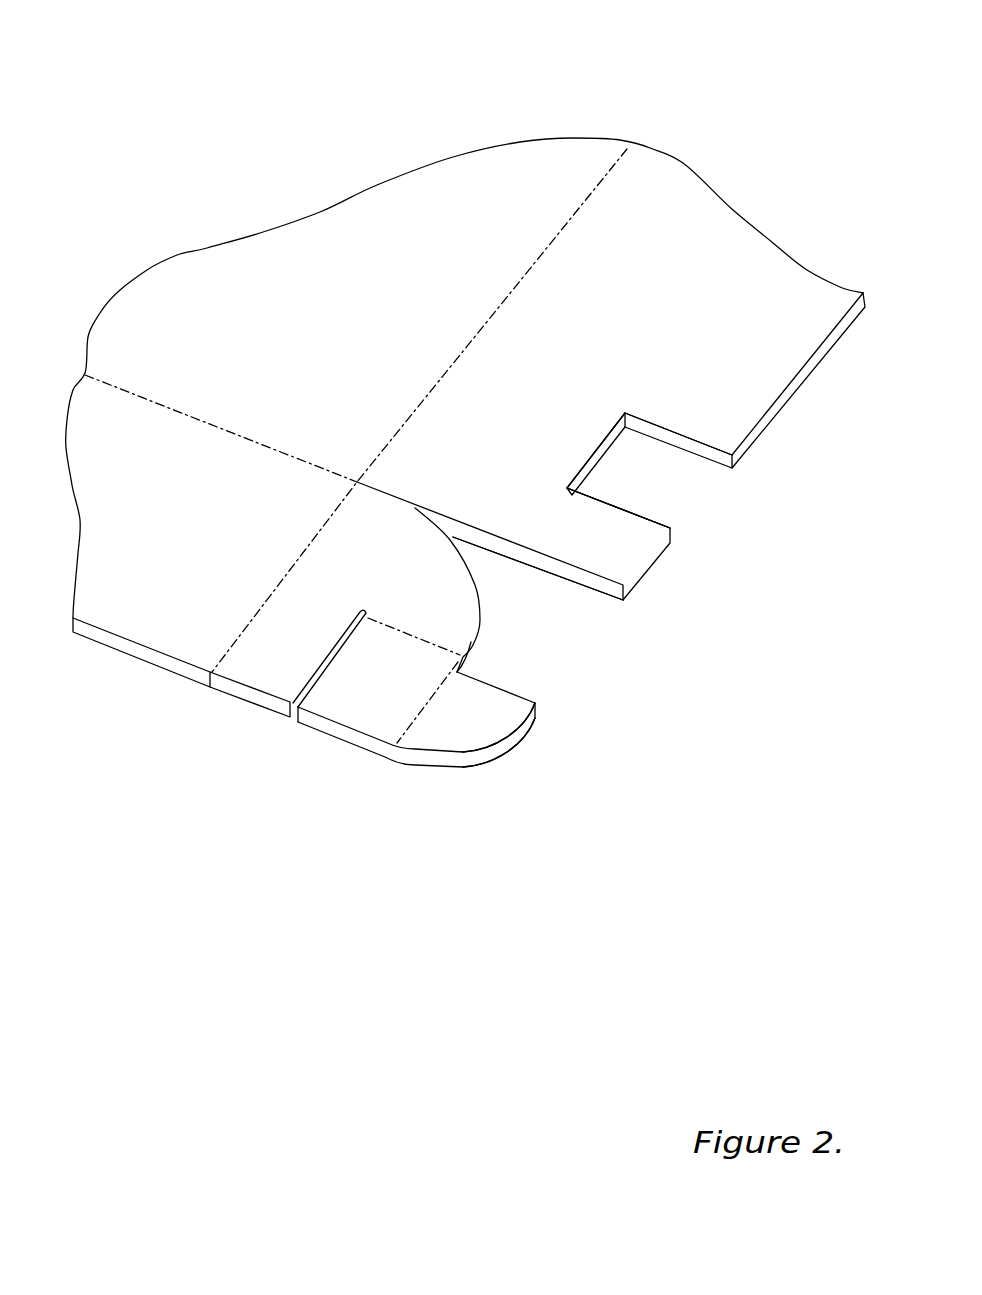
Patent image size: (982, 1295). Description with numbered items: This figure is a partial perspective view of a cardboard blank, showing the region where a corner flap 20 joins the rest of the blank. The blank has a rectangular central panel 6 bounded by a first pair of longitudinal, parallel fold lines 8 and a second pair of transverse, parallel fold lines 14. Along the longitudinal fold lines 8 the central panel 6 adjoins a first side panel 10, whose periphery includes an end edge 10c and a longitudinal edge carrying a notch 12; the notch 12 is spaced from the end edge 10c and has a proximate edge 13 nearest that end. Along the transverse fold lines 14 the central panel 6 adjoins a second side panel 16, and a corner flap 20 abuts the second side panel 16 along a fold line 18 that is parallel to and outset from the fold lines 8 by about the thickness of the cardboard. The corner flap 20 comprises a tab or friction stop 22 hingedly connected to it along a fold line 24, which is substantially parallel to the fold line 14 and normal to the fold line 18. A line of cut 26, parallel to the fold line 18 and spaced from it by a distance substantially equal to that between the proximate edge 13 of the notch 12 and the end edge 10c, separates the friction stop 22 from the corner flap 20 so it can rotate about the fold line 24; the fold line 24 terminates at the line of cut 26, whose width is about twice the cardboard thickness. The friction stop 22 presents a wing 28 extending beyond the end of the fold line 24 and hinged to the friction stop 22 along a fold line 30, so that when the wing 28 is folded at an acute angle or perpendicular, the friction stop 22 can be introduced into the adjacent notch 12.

The central panel 6 is at (397, 270).
The first pair of longitudinal fold lines 8 is at (583, 197).
The first pair of opposed side panels 10 is at (658, 292).
The end edge of side panel 10c is at (576, 590).
The notch 12 is at (668, 470).
The proximate edge of notch 13 is at (648, 512).
The second pair of transverse fold lines 14 is at (198, 407).
The second pair of opposed side panels 16 is at (157, 562).
The fold lines 18 is at (257, 604).
The corner flap 20 is at (427, 592).
The friction stop 22 is at (373, 707).
The fold line 24 is at (433, 640).
The line of cut 26 is at (290, 723).
The wing 28 is at (476, 716).
The fold line 30 is at (438, 712).